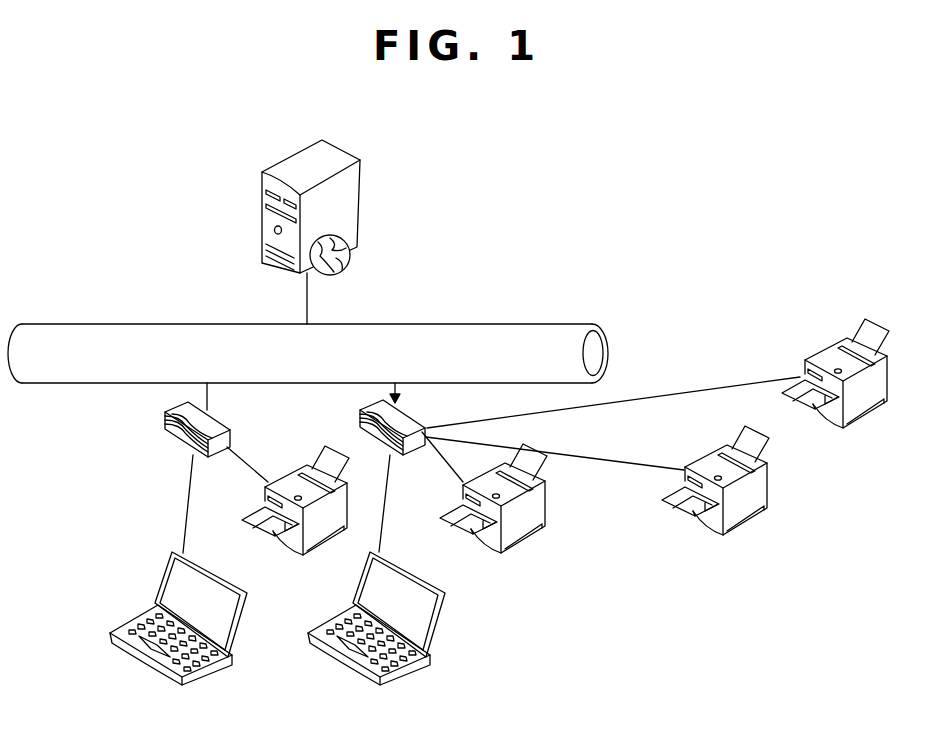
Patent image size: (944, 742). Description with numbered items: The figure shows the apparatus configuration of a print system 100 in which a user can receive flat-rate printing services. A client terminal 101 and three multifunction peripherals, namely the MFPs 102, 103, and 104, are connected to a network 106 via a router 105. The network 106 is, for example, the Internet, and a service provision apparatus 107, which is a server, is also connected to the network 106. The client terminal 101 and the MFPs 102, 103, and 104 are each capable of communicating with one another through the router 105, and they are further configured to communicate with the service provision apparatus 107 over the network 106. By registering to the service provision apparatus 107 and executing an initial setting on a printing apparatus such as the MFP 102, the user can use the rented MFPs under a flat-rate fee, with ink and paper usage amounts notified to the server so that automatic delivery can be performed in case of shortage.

The print system 100 is at (765, 687).
The client terminal 101 is at (400, 670).
The MFP 102 is at (520, 543).
The MFP 103 is at (743, 527).
The MFP 104 is at (832, 345).
The router 105 is at (358, 420).
The network 106 is at (597, 352).
The service provision apparatus 107 is at (298, 155).